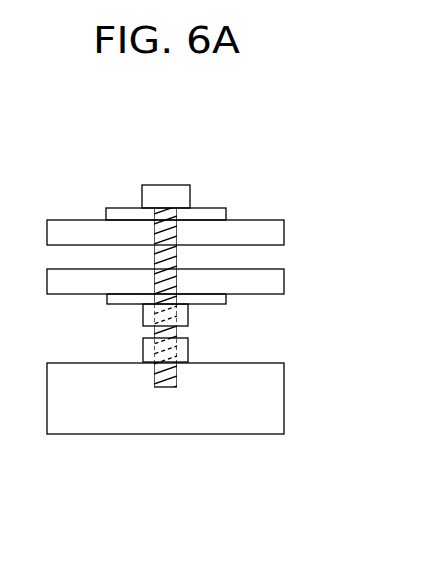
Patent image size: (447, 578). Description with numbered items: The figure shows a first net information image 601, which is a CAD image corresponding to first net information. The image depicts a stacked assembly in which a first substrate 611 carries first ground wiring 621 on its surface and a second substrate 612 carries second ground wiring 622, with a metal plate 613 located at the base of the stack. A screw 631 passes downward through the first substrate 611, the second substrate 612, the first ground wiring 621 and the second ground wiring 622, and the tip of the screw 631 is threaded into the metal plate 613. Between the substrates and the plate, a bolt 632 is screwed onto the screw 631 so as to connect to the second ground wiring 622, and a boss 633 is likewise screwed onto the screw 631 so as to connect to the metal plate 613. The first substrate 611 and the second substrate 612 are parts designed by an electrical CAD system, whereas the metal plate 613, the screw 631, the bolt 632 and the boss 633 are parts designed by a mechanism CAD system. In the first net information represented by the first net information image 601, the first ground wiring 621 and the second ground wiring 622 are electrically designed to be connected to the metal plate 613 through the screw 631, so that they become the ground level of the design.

The first net information image 601 is at (287, 147).
The first substrate 611 is at (284, 223).
The second substrate 612 is at (284, 272).
The metal plate 613 is at (284, 398).
The first ground wiring 621 is at (205, 208).
The second ground wiring 622 is at (226, 303).
The screw 631 is at (158, 185).
The bolt 632 is at (142, 315).
The boss 633 is at (189, 350).